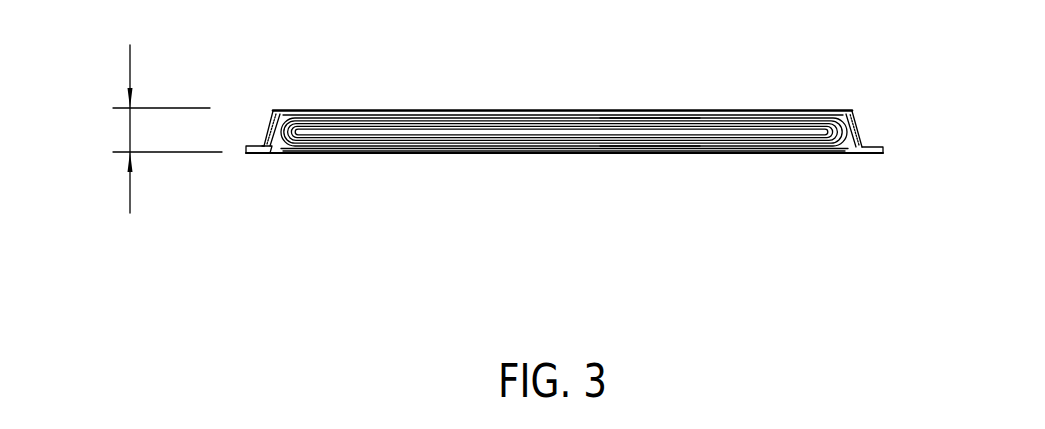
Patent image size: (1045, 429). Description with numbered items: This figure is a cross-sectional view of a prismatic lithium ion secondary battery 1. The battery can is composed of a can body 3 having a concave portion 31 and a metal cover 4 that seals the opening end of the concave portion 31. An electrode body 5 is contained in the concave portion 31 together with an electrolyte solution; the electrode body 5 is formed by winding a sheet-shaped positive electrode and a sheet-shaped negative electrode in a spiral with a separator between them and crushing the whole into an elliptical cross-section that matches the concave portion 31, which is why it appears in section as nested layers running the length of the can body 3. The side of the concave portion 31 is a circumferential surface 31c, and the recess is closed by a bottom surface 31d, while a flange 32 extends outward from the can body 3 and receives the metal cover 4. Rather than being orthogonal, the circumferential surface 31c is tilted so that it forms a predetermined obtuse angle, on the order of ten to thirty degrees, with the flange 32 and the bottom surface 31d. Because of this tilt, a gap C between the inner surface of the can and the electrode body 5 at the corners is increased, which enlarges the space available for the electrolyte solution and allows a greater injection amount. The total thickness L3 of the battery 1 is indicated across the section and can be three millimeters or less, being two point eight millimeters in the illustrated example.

The battery 1 is at (786, 86).
The can body 3 is at (514, 96).
The concave portion 31 is at (685, 112).
The circumferential surface 31c is at (266, 127).
The bottom surface 31d is at (312, 108).
The flange 32 is at (873, 145).
The metal cover 4 is at (808, 168).
The electrode body 5 is at (425, 120).
The gap C is at (272, 144).
The total thickness L3 is at (130, 128).